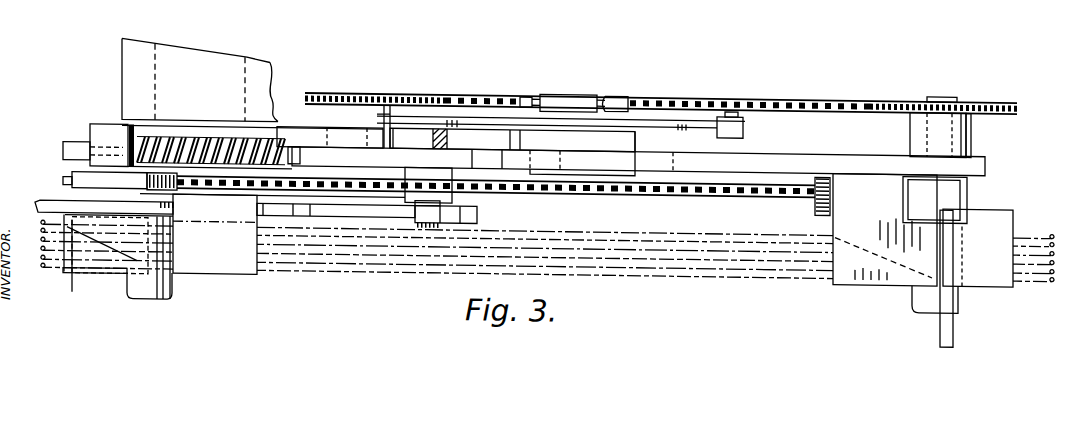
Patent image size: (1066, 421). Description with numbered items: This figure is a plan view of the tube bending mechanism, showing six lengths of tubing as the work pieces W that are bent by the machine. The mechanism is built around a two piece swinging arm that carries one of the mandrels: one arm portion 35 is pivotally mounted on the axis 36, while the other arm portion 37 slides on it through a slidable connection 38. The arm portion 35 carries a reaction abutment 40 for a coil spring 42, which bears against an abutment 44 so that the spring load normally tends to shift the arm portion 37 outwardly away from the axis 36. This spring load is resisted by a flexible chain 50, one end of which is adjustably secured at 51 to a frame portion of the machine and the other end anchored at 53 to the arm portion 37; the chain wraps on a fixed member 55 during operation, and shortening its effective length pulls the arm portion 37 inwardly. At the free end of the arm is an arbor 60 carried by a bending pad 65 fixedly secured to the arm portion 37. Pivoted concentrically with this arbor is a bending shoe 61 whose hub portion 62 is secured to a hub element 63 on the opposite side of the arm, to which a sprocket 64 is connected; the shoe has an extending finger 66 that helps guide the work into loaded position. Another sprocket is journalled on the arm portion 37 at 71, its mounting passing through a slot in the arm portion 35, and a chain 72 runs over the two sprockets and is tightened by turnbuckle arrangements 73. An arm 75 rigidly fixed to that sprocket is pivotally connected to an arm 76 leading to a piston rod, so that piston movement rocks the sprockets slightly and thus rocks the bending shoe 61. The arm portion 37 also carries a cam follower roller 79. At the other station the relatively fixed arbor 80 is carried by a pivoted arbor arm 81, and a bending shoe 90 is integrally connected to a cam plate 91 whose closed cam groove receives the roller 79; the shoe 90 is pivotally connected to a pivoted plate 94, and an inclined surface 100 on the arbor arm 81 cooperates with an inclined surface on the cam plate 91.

The axis 36 is at (198, 58).
The reaction abutment 40 is at (93, 133).
The coil spring 42 is at (138, 130).
The abutment 44 is at (282, 152).
The arm portion 35 is at (294, 131).
The sprocket journal 71 is at (372, 108).
The chain 72 is at (410, 138).
The sprocket 64 is at (903, 90).
The turnbuckle arrangement 73 is at (580, 92).
The arm 75 is at (635, 116).
The arm 76 is at (745, 127).
The arm portion 37 is at (805, 149).
The slidable connection 38 is at (580, 172).
The hub element 63 is at (971, 124).
The adjustable chain anchorage 51 is at (63, 183).
The fixed member 55 is at (180, 192).
The chain 50 is at (655, 191).
The chain anchorage 53 is at (832, 185).
The roller 79 is at (424, 227).
The cam plate 91 is at (340, 217).
The plate 94 is at (50, 206).
The bending shoe 90 is at (240, 276).
The arbor 80 is at (152, 292).
The arbor arm 81 is at (97, 277).
The inclined surface 100 is at (72, 295).
The bending pad 65 is at (833, 279).
The hub portion 62 is at (968, 182).
The bending shoe 61 is at (998, 206).
The finger 66 is at (940, 326).
The arbor 60 is at (958, 297).
The work pieces W is at (660, 270).